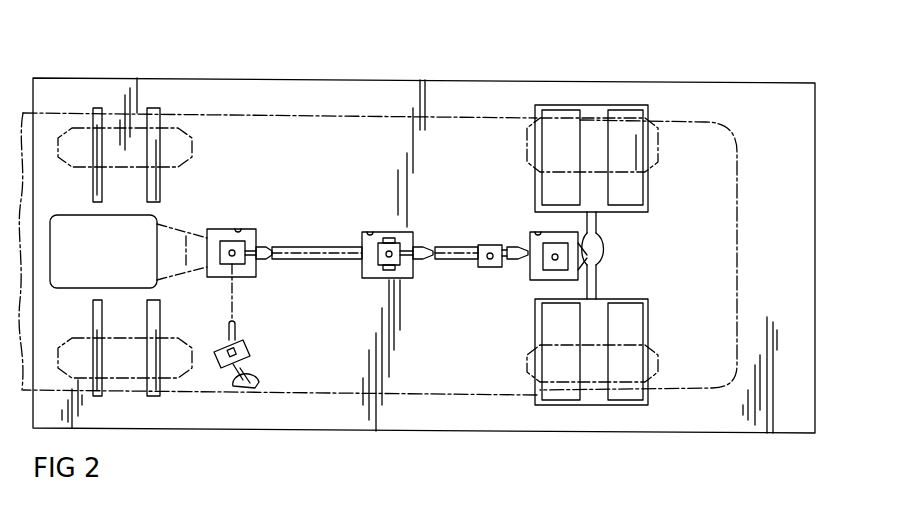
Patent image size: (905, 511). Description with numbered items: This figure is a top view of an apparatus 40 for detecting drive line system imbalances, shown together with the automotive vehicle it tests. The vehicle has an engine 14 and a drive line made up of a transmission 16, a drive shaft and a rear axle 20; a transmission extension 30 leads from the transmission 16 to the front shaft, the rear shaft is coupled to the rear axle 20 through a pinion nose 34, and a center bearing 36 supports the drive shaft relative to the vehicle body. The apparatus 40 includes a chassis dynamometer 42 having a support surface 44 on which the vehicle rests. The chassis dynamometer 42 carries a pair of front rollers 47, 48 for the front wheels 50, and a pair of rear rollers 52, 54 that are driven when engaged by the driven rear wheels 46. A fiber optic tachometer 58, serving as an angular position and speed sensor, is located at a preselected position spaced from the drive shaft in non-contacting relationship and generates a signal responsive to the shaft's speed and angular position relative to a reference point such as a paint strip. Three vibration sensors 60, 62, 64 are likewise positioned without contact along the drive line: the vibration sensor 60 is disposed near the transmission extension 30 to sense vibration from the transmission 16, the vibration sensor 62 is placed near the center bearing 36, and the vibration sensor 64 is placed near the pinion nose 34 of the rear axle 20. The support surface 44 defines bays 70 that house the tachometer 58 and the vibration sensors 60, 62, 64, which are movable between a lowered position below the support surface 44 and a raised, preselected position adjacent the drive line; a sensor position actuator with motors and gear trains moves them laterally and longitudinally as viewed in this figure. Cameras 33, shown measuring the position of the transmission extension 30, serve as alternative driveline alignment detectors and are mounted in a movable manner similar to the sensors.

The engine 14 is at (85, 215).
The transmission 16 is at (183, 235).
The rear axle 20 is at (597, 228).
The transmission extension 30 is at (196, 268).
The cameras 33 is at (255, 345).
The pinion nose 34 is at (595, 257).
The center bearing 36 is at (375, 278).
The apparatus 40 is at (491, 100).
The chassis dynamometer 42 is at (662, 410).
The support surface 44 is at (740, 100).
The rear wheels 46 is at (660, 143).
The front roller 47 is at (93, 130).
The front roller 48 is at (160, 148).
The front wheels 50 is at (178, 130).
The rear roller 52 is at (570, 112).
The rear roller 54 is at (630, 115).
The fiber optic tachometer 58 is at (480, 245).
The vibration sensor 60 is at (250, 272).
The vibration sensor 62 is at (400, 280).
The vibration sensor 64 is at (546, 268).
The bays 70 is at (240, 229).